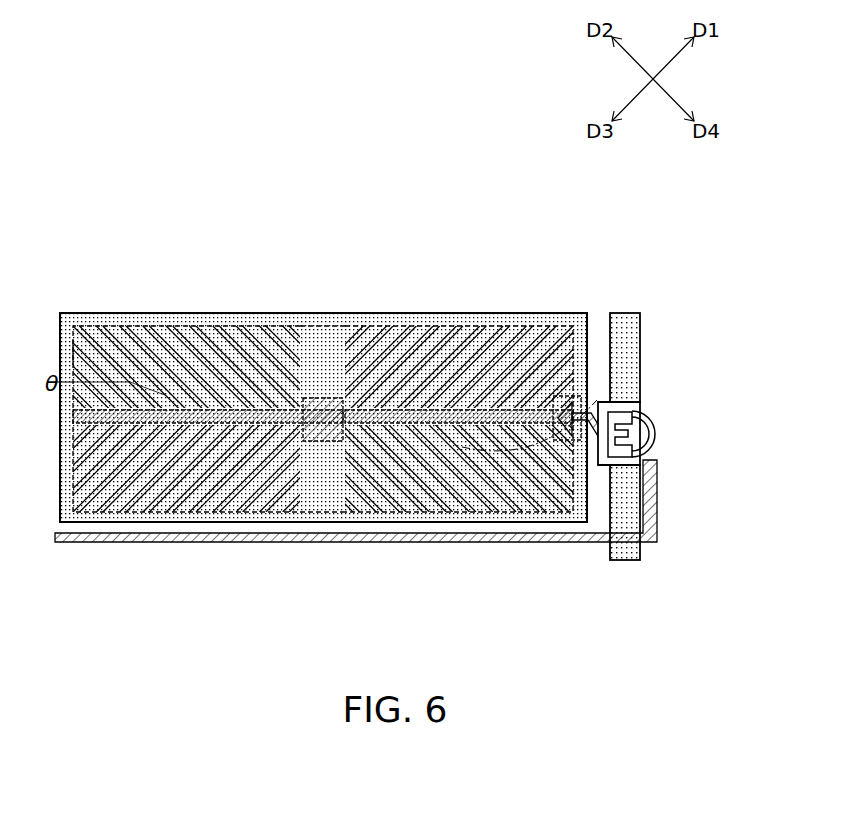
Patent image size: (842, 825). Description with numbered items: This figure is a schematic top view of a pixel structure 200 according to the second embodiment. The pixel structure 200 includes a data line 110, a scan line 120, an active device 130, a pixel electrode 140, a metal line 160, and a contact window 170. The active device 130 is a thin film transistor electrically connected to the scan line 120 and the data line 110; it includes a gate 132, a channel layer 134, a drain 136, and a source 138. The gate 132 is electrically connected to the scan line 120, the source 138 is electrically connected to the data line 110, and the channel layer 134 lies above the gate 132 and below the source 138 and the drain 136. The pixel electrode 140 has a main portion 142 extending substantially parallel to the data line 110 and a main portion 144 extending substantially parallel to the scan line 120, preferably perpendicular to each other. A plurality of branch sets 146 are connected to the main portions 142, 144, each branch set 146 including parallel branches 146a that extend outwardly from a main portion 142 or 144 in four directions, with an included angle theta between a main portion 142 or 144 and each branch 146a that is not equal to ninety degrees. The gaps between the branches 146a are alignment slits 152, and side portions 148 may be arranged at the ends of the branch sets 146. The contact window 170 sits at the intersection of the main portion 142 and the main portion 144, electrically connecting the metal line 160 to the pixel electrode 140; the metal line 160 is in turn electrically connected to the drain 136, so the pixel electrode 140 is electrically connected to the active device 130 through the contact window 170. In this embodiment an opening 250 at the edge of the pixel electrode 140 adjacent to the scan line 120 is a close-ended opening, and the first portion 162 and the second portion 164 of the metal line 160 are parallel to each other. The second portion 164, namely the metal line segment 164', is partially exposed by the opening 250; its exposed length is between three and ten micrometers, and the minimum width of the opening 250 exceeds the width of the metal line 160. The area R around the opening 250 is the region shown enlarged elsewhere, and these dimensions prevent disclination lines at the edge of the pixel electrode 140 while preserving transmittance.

The data line 110 is at (126, 545).
The scan line 120 is at (632, 357).
The active device 130 is at (742, 365).
The gate 132 is at (655, 450).
The channel layer 134 is at (658, 440).
The drain 136 is at (648, 420).
The source 138 is at (625, 415).
The pixel electrode 140 is at (290, 240).
The main portion 142 is at (232, 400).
The main portion 144 is at (322, 398).
The branch sets 146 is at (173, 326).
The branches 146a is at (75, 355).
The side portions 148 is at (125, 318).
The alignment slits 152 is at (500, 345).
The metal line 160 is at (497, 240).
The first portion 162 is at (388, 326).
The second portion 164 is at (460, 378).
The metal line segment 164' is at (459, 333).
The contact window 170 is at (330, 545).
The pixel structure 200 is at (683, 610).
The opening 250 is at (567, 398).
The area R is at (597, 400).